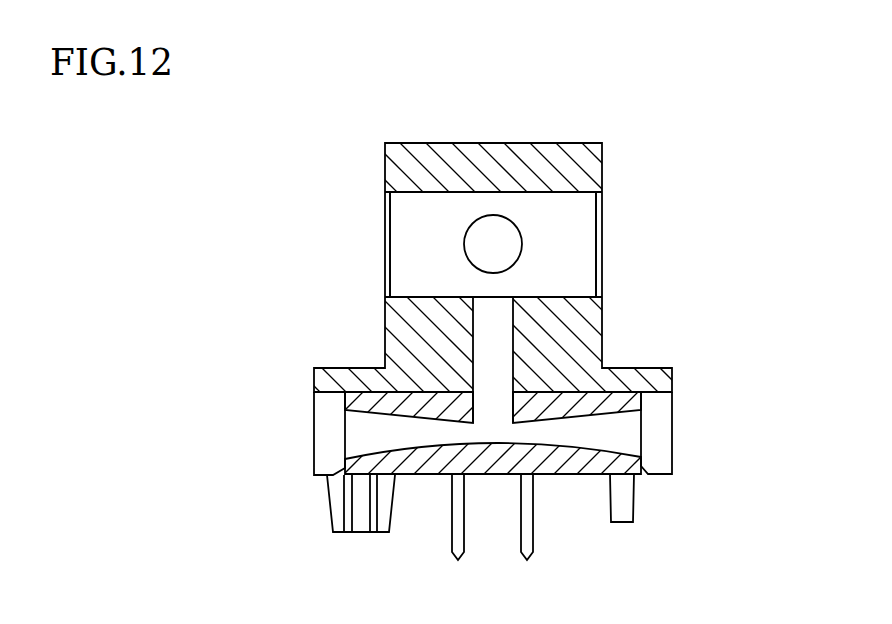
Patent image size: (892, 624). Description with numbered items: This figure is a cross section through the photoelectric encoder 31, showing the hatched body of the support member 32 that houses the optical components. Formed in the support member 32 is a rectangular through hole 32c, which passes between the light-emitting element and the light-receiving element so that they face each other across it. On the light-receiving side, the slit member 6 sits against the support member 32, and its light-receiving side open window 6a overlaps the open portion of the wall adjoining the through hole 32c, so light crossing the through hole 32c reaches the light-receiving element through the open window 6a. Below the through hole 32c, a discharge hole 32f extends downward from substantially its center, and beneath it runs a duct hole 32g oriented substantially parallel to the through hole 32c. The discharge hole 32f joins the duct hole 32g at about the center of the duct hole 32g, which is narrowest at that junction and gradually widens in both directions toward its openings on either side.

The photoelectric encoder 31 is at (713, 48).
The support member 32 is at (386, 150).
The rectangular through hole 32c is at (600, 212).
The discharge hole 32f is at (495, 364).
The duct hole 32g is at (629, 434).
The slit member 6 is at (565, 256).
The light-receiving side open window 6a is at (480, 248).